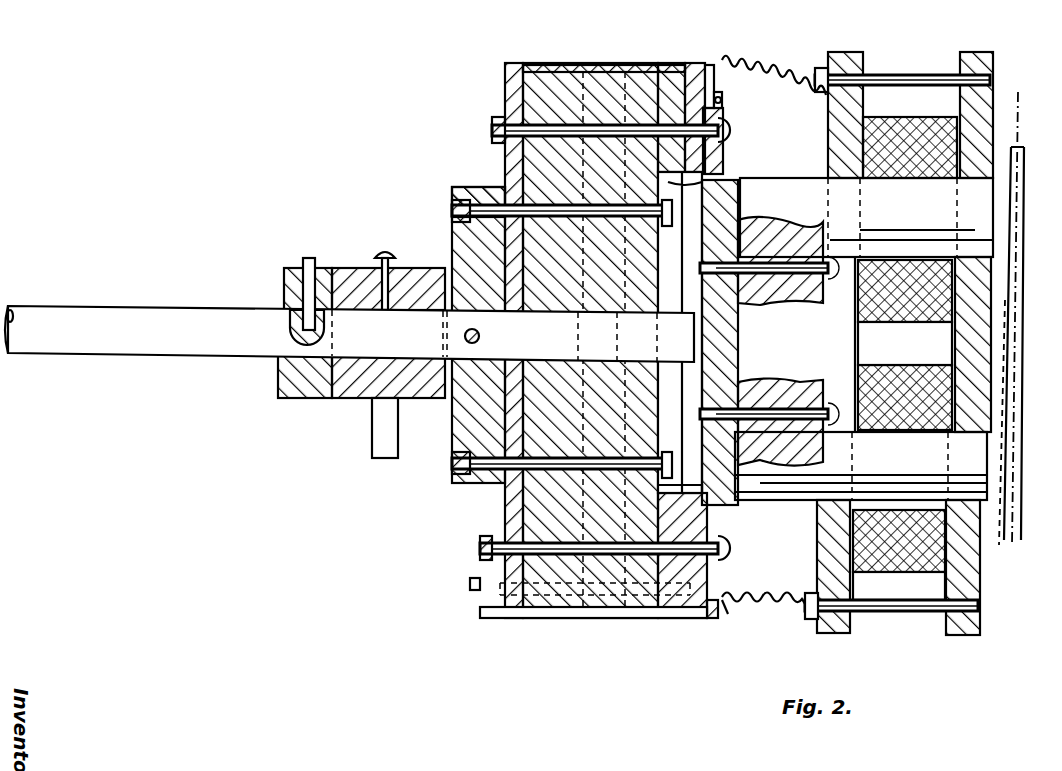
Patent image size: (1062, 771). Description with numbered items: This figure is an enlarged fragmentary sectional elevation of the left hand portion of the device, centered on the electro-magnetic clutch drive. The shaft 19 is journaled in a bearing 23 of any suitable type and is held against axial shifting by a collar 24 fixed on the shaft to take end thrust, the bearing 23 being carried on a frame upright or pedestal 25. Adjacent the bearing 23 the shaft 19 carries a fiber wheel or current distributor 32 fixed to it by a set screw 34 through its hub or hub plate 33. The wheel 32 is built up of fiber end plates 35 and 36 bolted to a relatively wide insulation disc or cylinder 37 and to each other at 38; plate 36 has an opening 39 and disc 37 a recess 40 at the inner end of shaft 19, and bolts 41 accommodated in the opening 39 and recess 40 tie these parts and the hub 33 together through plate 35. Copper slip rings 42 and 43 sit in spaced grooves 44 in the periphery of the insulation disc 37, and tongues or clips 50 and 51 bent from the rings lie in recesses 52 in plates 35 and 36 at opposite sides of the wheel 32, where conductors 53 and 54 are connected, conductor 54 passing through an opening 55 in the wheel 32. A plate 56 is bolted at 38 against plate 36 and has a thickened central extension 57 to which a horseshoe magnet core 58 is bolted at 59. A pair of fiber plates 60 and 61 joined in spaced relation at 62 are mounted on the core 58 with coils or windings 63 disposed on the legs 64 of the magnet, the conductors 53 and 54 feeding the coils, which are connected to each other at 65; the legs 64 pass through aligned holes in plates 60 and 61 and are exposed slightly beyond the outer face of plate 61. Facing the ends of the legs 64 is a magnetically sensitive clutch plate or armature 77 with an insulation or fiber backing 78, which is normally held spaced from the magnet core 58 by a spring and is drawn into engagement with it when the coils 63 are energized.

The shaft 19 is at (47, 308).
The bearing 23 is at (355, 266).
The collar 24 is at (310, 400).
The frame upright or pedestal 25 is at (372, 445).
The fiber wheel or current distributor 32 is at (495, 102).
The hub or hub plate 33 is at (452, 250).
The set screw 34 is at (480, 336).
The fiber disc or end plate 35 is at (505, 178).
The fiber disc or end plate 36 is at (738, 160).
The insulation or fiber disc or cylinder 37 is at (670, 70).
The bolts 38 is at (492, 130).
The opening 39 is at (700, 487).
The recess 40 is at (738, 180).
The bolts 41 is at (452, 207).
The copper slip ring 42 is at (546, 65).
The copper slip ring 43 is at (690, 65).
The grooves 44 is at (608, 65).
The tongue or clip 50 is at (490, 620).
The tongue or clip 51 is at (722, 100).
The recesses 52 is at (708, 70).
The conductor 53 is at (772, 78).
The conductor 54 is at (748, 610).
The opening 55 is at (642, 622).
The plate 56 is at (724, 592).
The thickened central portion or extension 57 is at (740, 212).
The horseshoe magnet core 58 is at (795, 500).
The bolts 59 is at (835, 300).
The fiber plate 60 is at (848, 635).
The fiber plate 61 is at (965, 637).
The bolts 62 is at (898, 75).
The coils or windings 63 is at (905, 344).
The legs 64 is at (864, 339).
The connection 65 is at (902, 461).
The clutch plate or disc and armature 77 is at (1020, 108).
The insulation or fiber disc backing 78 is at (1026, 160).